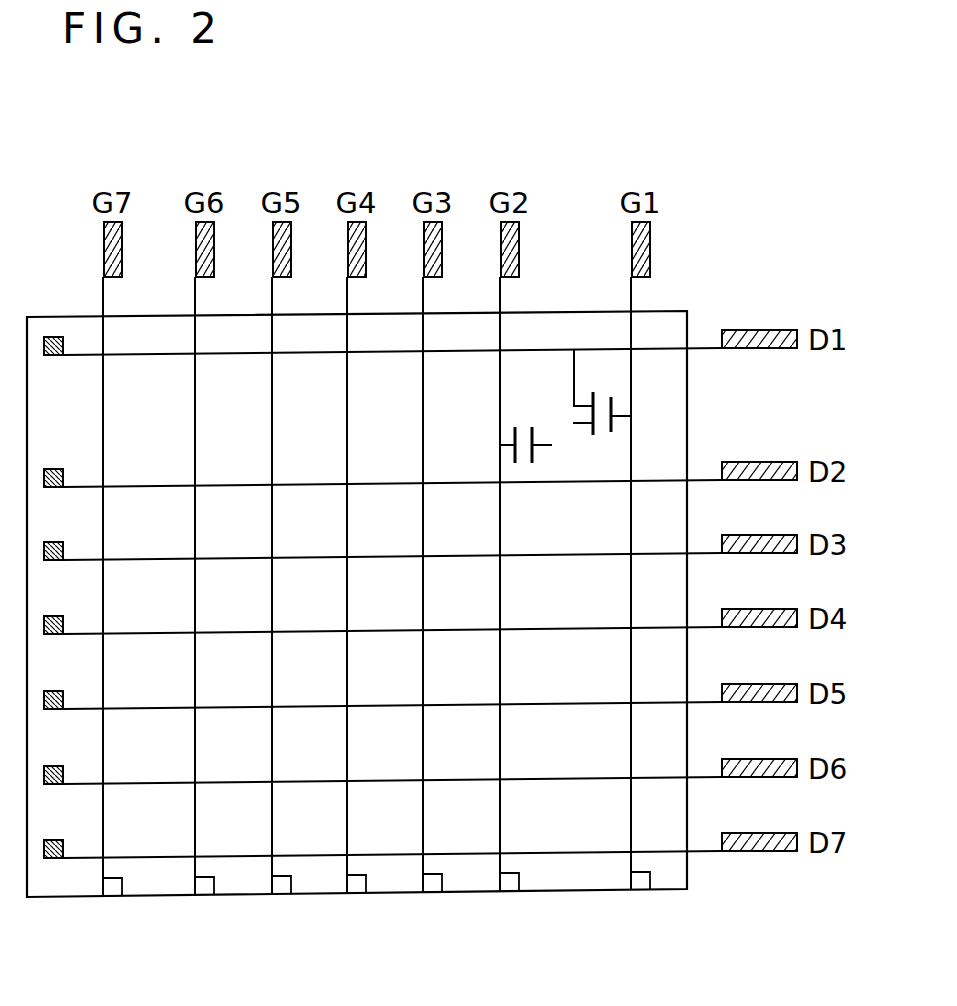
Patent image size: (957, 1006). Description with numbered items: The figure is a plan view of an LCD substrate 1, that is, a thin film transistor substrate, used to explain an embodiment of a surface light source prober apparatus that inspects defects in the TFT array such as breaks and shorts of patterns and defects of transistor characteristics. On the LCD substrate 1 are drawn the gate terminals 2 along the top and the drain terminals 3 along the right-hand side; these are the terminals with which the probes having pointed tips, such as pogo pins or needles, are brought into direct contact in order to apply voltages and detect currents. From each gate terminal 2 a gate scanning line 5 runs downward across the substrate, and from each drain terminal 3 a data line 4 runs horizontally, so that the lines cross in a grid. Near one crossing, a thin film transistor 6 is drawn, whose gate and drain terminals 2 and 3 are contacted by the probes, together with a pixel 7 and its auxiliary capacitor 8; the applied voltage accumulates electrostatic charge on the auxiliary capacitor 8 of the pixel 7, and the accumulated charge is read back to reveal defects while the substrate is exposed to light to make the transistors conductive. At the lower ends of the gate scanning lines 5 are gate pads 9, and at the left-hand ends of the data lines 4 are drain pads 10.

The LCD substrate 1 is at (687, 410).
The gate terminal 2 is at (519, 240).
The drain terminal 3 is at (762, 329).
The data line 4 is at (390, 350).
The gate scanning line 5 is at (631, 668).
The thin film transistor 6 is at (605, 390).
The pixel 7 is at (532, 387).
The auxiliary capacitor 8 is at (525, 463).
The gate pad 9 is at (433, 885).
The drain pad 10 is at (55, 469).